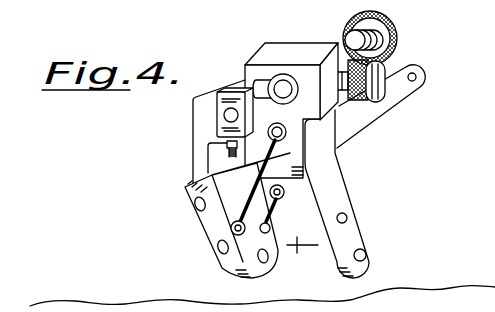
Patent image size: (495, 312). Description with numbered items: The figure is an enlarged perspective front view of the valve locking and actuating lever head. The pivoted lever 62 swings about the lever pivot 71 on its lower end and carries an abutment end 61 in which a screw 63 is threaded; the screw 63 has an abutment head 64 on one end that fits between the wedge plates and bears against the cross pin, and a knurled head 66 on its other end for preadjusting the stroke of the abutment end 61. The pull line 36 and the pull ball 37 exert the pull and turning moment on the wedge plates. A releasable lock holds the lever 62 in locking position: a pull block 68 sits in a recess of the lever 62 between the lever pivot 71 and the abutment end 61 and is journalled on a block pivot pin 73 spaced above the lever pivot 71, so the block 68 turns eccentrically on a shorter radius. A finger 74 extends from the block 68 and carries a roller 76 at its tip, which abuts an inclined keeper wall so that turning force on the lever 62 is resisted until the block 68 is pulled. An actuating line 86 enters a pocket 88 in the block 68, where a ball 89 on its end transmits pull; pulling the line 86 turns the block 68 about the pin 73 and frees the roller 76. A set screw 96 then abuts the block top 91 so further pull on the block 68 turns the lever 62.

The pull line 36 is at (256, 191).
The pull ball 37 is at (222, 240).
The abutment end 61 is at (299, 47).
The pivoted lever 62 is at (341, 189).
The screw 63 is at (350, 36).
The abutment head 64 is at (217, 104).
The knurled head 66 is at (390, 34).
The pull block 68 is at (302, 254).
The lever pivot 71 is at (366, 255).
The block pivot pin 73 is at (347, 217).
The finger 74 is at (372, 114).
The roller 76 is at (427, 78).
The actuating line 86 is at (272, 205).
The pocket 88 is at (285, 192).
The ball 89 is at (271, 228).
The block top 91 is at (243, 158).
The set screw 96 is at (226, 148).